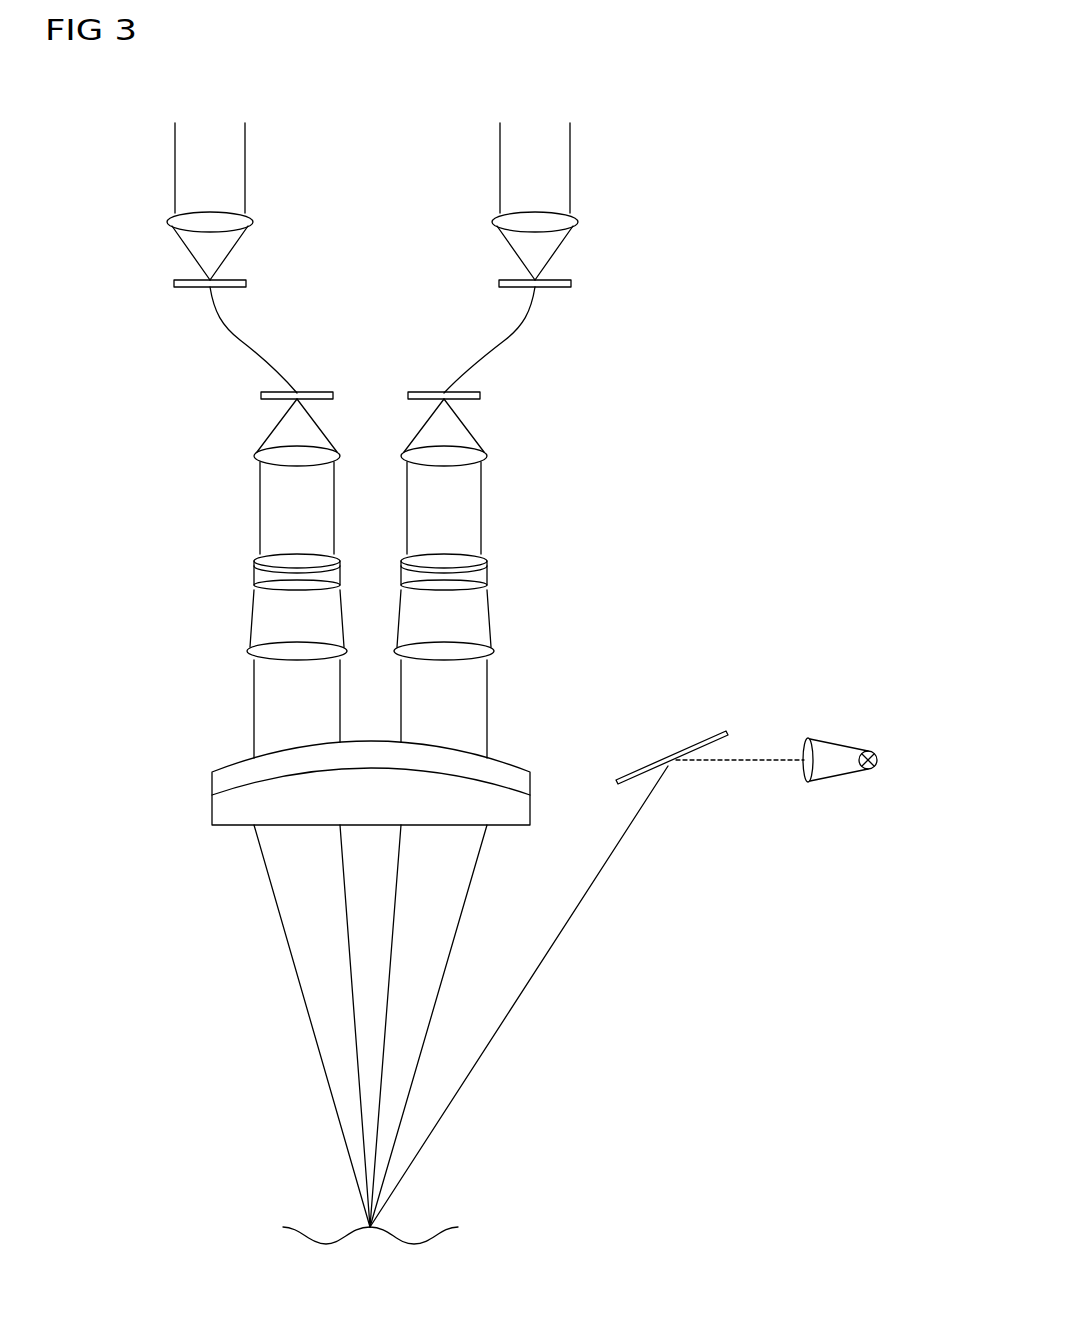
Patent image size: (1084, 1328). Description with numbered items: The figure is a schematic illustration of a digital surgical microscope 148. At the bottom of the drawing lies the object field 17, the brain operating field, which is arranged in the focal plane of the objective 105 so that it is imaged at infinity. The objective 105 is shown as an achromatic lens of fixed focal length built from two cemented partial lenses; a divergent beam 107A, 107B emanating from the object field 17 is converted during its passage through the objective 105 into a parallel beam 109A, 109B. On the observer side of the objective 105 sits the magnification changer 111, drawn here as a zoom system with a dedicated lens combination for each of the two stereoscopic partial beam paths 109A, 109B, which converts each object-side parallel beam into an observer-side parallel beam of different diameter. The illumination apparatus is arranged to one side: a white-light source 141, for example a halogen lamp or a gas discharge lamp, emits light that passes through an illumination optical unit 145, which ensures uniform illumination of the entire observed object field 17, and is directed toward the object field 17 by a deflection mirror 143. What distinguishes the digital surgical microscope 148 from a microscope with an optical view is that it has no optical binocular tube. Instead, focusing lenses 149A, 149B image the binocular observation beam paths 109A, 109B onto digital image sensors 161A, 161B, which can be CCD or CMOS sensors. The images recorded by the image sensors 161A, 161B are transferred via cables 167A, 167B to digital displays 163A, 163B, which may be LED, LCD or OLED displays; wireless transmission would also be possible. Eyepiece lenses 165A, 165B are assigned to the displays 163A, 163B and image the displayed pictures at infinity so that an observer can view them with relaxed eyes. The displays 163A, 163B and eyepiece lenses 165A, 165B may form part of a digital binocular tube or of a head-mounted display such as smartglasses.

The digital surgical microscope 148 is at (764, 339).
The eyepiece lens 165A is at (168, 222).
The eyepiece lens 165B is at (578, 222).
The digital display 163A is at (174, 283).
The digital display 163B is at (572, 283).
The cable 167A is at (233, 333).
The cable 167B is at (514, 333).
The digital image sensor 161A is at (260, 395).
The digital image sensor 161B is at (481, 395).
The focusing lens 149A is at (254, 457).
The focusing lens 149B is at (488, 457).
The magnification changer 111 is at (215, 547).
The parallel beam 109A is at (254, 702).
The parallel beam 109B is at (490, 702).
The objective 105 is at (190, 733).
The divergent beam 107A is at (297, 975).
The divergent beam 107B is at (464, 905).
The deflection mirror 143 is at (690, 740).
The illumination optical unit 145 is at (850, 745).
The white-light source 141 is at (878, 760).
The object field 17 is at (384, 1226).